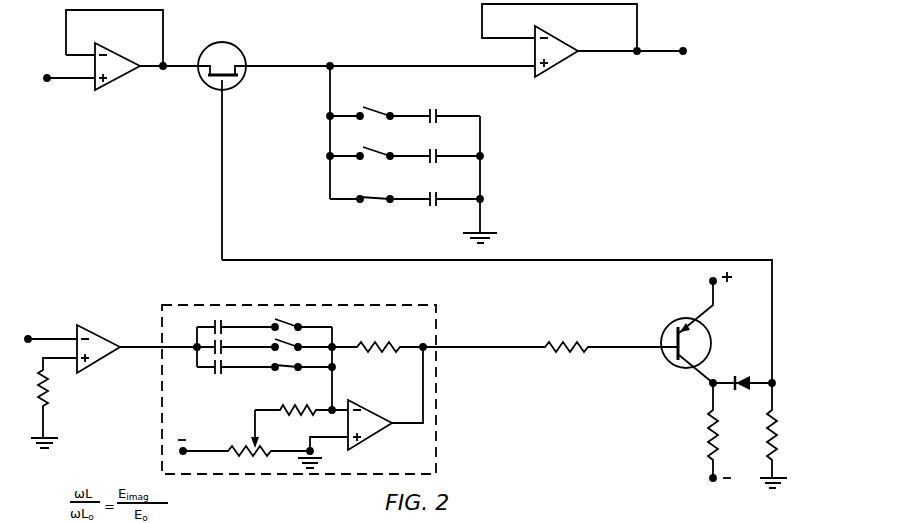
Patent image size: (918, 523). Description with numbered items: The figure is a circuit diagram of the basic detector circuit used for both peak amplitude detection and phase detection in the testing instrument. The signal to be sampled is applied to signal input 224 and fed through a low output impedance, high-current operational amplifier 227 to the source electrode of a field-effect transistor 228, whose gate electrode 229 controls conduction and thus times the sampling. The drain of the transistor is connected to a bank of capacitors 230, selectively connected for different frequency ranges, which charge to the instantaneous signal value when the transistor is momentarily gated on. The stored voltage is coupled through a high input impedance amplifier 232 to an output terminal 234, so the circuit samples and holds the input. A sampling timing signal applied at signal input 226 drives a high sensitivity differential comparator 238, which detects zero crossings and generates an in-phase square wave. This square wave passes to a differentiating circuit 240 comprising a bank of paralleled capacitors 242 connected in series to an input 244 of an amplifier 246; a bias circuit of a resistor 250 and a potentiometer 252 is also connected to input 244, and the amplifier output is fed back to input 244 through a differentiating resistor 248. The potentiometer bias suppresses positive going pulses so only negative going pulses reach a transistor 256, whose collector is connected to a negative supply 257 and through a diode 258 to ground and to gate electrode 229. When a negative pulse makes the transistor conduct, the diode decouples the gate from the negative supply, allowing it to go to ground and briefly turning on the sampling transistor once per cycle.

The signal input 224 is at (47, 78).
The signal input 226 is at (28, 338).
The operational amplifier 227 is at (110, 80).
The field-effect transistor 228 is at (240, 50).
The gate electrode 229 is at (226, 84).
The bank of capacitors 230 is at (488, 143).
The amplifier 232 is at (558, 62).
The output terminal 234 is at (683, 51).
The differential comparator 238 is at (97, 340).
The differentiating circuit 240 is at (437, 327).
The bank of paralleled capacitors 242 is at (228, 321).
The input of amplifier 244 is at (338, 408).
The amplifier 246 is at (378, 420).
The differentiating resistor 248 is at (384, 345).
The resistor 250 is at (300, 405).
The potentiometer 252 is at (252, 455).
The transistor 256 is at (670, 320).
The negative supply 257 is at (713, 480).
The diode 258 is at (743, 378).